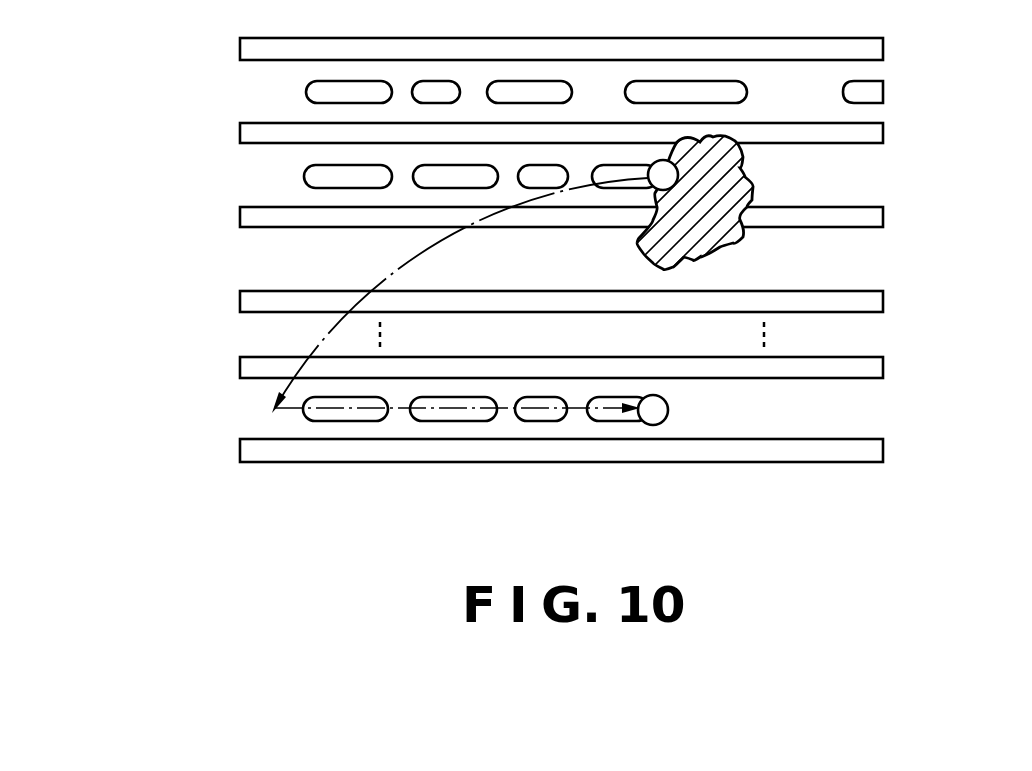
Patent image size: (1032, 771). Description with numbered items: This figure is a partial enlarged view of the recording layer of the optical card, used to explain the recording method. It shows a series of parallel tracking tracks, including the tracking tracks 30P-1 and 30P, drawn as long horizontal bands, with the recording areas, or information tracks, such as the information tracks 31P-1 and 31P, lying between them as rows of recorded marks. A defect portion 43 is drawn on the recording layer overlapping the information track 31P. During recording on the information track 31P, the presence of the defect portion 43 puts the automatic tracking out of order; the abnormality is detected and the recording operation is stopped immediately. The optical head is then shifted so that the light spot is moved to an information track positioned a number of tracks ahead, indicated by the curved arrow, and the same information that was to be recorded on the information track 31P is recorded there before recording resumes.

The tracking track 30P-1 is at (240, 46).
The tracking track 30P is at (240, 132).
The recording area (information track) 31P-1 is at (898, 64).
The recording area (information track) 31P is at (898, 154).
The defect portion 43 is at (733, 250).